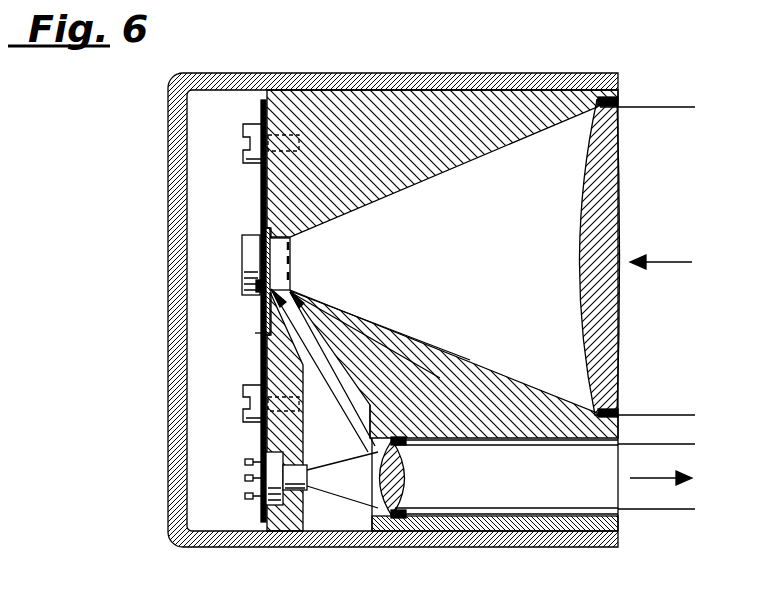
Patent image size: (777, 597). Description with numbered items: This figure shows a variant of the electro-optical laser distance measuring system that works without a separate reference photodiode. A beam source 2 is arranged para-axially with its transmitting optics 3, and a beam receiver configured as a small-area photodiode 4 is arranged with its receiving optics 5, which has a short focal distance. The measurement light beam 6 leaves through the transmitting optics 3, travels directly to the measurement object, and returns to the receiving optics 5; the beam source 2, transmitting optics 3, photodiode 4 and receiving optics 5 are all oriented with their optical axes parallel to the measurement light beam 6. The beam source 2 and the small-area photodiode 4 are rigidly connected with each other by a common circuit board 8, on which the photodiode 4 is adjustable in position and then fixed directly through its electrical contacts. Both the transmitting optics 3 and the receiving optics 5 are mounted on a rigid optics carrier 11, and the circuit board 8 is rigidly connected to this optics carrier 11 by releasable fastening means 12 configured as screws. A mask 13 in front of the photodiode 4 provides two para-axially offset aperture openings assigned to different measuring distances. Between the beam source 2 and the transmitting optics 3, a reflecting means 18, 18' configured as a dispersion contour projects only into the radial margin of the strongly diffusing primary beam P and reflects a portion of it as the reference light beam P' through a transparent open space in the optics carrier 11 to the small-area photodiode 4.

The beam source 2 is at (277, 470).
The transmitting optics 3 is at (405, 482).
The small-area photodiode 4 is at (248, 267).
The receiving optics 5 is at (617, 203).
The measurement light beam 6 is at (672, 263).
The circuit board 8 is at (262, 183).
The optics carrier 11 is at (478, 416).
The releasable fastening means 12 is at (243, 130).
The mask 13 is at (292, 268).
The reflecting means 18 is at (355, 518).
The reflecting means 18' is at (390, 405).
The primary beam P is at (309, 535).
The reference light beam P' is at (369, 329).